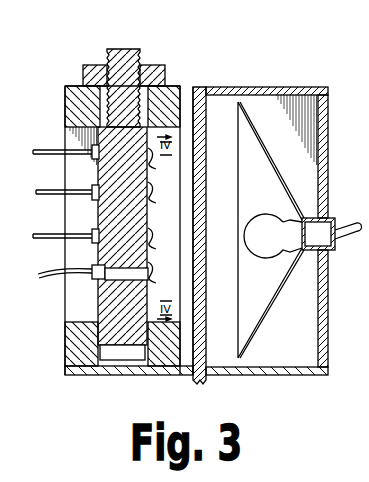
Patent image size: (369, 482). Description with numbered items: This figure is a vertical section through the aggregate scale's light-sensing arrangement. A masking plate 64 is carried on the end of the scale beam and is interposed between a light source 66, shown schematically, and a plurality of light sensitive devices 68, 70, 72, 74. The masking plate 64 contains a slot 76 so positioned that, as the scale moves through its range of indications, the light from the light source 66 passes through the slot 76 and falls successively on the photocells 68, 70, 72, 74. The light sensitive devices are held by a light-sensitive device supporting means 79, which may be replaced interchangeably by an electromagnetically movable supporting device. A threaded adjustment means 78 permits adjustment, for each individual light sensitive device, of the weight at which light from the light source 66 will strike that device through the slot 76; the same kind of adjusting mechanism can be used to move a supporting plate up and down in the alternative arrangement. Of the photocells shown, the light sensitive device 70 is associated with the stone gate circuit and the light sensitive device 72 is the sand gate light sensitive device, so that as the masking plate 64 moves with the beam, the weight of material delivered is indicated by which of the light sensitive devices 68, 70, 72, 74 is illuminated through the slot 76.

The masking plate 64 is at (200, 345).
The light source 66 is at (265, 246).
The light sensitive device 68 is at (162, 161).
The light sensitive device 70 is at (162, 195).
The light sensitive device 72 is at (162, 241).
The light sensitive device 74 is at (162, 272).
The slot 76 is at (200, 288).
The threaded adjustment means 78 is at (123, 56).
The light-sensitive device supporting means 79 is at (105, 302).